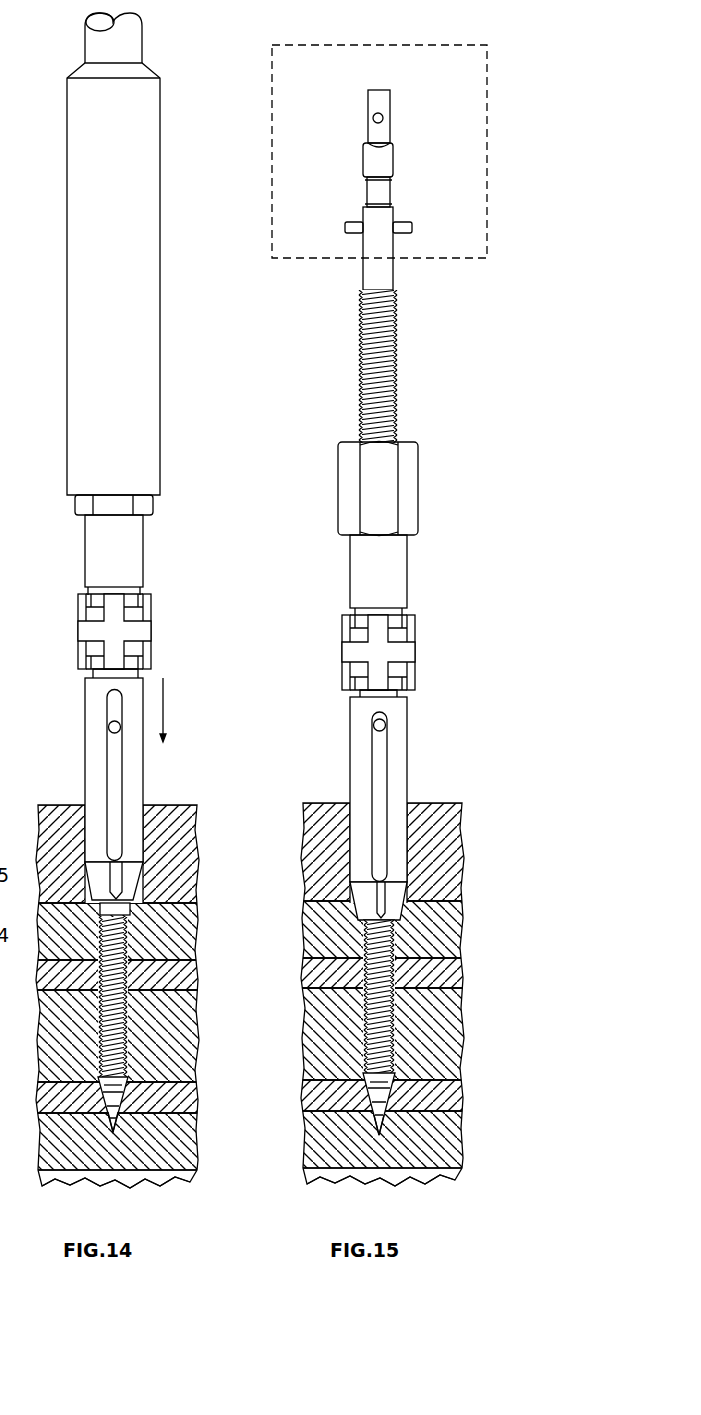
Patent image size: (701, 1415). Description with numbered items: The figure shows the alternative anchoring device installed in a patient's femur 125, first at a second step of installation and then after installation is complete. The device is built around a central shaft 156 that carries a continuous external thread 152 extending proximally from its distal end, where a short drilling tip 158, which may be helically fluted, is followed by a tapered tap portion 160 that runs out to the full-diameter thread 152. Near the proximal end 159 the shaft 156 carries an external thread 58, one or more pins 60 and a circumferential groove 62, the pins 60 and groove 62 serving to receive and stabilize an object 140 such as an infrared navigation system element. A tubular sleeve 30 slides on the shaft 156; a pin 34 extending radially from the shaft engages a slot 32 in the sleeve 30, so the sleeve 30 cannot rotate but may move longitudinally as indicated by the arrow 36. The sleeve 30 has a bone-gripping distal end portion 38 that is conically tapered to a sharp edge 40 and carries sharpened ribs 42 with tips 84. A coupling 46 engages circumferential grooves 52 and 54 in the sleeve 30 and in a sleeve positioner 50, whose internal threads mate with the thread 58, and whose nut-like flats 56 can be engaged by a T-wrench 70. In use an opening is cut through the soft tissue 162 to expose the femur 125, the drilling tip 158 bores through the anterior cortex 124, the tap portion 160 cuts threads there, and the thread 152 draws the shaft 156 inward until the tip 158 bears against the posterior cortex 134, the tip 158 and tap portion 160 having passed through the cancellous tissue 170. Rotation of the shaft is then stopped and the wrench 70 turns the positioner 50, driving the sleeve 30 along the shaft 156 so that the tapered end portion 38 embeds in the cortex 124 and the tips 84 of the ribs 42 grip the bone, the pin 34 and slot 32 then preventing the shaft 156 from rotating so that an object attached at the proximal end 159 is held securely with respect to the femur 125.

In FIG. 14, the tubular sleeve 30 is at (85, 770).
In FIG. 15, the tubular sleeve 30 is at (407, 714).
In FIG. 14, the slot 32 is at (107, 783).
In FIG. 15, the slot 32 is at (372, 775).
In FIG. 14, the pin 34 is at (108, 727).
In FIG. 15, the pin 34 is at (372, 727).
In FIG. 14, the arrow 36 is at (166, 702).
In FIG. 14, the bone-gripping distal end portion 38 is at (128, 880).
In FIG. 15, the bone-gripping distal end portion 38 is at (396, 905).
In FIG. 15, the sharp edge 40 is at (362, 937).
In FIG. 15, the sharpened ribs 42 is at (372, 910).
In FIG. 14, the coupling 46 is at (152, 632).
In FIG. 15, the coupling 46 is at (417, 652).
In FIG. 14, the sleeve positioner 50 is at (143, 548).
In FIG. 15, the sleeve positioner 50 is at (407, 570).
In FIG. 14, the circumferential groove 52 is at (92, 680).
In FIG. 15, the circumferential groove 52 is at (360, 700).
In FIG. 14, the circumferential groove 54 is at (88, 595).
In FIG. 15, the circumferential groove 54 is at (355, 614).
In FIG. 14, the flats 56 is at (75, 510).
In FIG. 15, the flats 56 is at (338, 492).
In FIG. 15, the external thread 58 is at (398, 355).
In FIG. 15, the pins 60 is at (345, 228).
In FIG. 15, the circumferential groove 62 is at (390, 190).
In FIG. 14, the T-wrench 70 is at (67, 290).
In FIG. 14, the tips 84 is at (133, 907).
In FIG. 15, the tips 84 is at (402, 922).
In FIG. 14, the anterior cortex 124 is at (197, 935).
In FIG. 15, the anterior cortex 124 is at (460, 935).
In FIG. 14, the femur 125 is at (170, 1178).
In FIG. 15, the femur 125 is at (434, 1178).
In FIG. 14, the posterior cortex 134 is at (197, 1148).
In FIG. 15, the posterior cortex 134 is at (462, 1148).
In FIG. 15, the object 140 is at (272, 155).
In FIG. 14, the external thread 152 is at (130, 1044).
In FIG. 15, the external thread 152 is at (397, 1043).
In FIG. 15, the central shaft 156 is at (393, 273).
In FIG. 14, the drilling tip 158 is at (113, 1133).
In FIG. 15, the drilling tip 158 is at (378, 1135).
In FIG. 15, the proximal end 159 is at (363, 165).
In FIG. 14, the tap portion 160 is at (120, 1100).
In FIG. 15, the tap portion 160 is at (387, 1097).
In FIG. 14, the soft tissue 162 is at (38, 838).
In FIG. 15, the soft tissue 162 is at (303, 838).
In FIG. 14, the cancellous tissue 170 is at (38, 975).
In FIG. 15, the cancellous tissue 170 is at (303, 976).